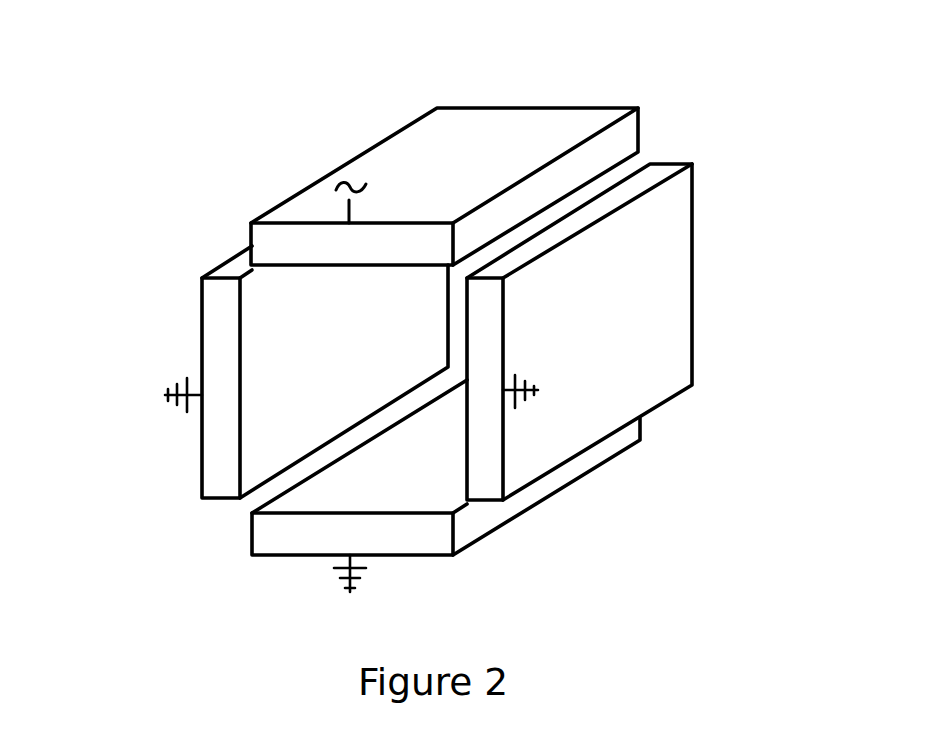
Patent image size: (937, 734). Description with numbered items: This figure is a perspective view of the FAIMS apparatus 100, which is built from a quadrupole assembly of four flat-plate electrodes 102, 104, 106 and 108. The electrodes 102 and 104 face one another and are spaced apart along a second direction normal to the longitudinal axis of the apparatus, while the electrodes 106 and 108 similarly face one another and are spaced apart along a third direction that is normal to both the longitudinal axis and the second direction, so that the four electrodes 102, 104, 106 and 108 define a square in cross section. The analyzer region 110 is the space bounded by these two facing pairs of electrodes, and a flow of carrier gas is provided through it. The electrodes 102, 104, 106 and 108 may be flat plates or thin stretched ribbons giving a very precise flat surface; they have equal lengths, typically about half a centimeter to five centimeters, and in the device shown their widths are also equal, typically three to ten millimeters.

The FAIMS apparatus 100 is at (210, 133).
The flat-plate electrode 102 is at (555, 120).
The flat-plate electrode 104 is at (432, 537).
The flat-plate electrode 106 is at (650, 312).
The flat-plate electrode 108 is at (215, 322).
The analyzer region 110 is at (333, 418).